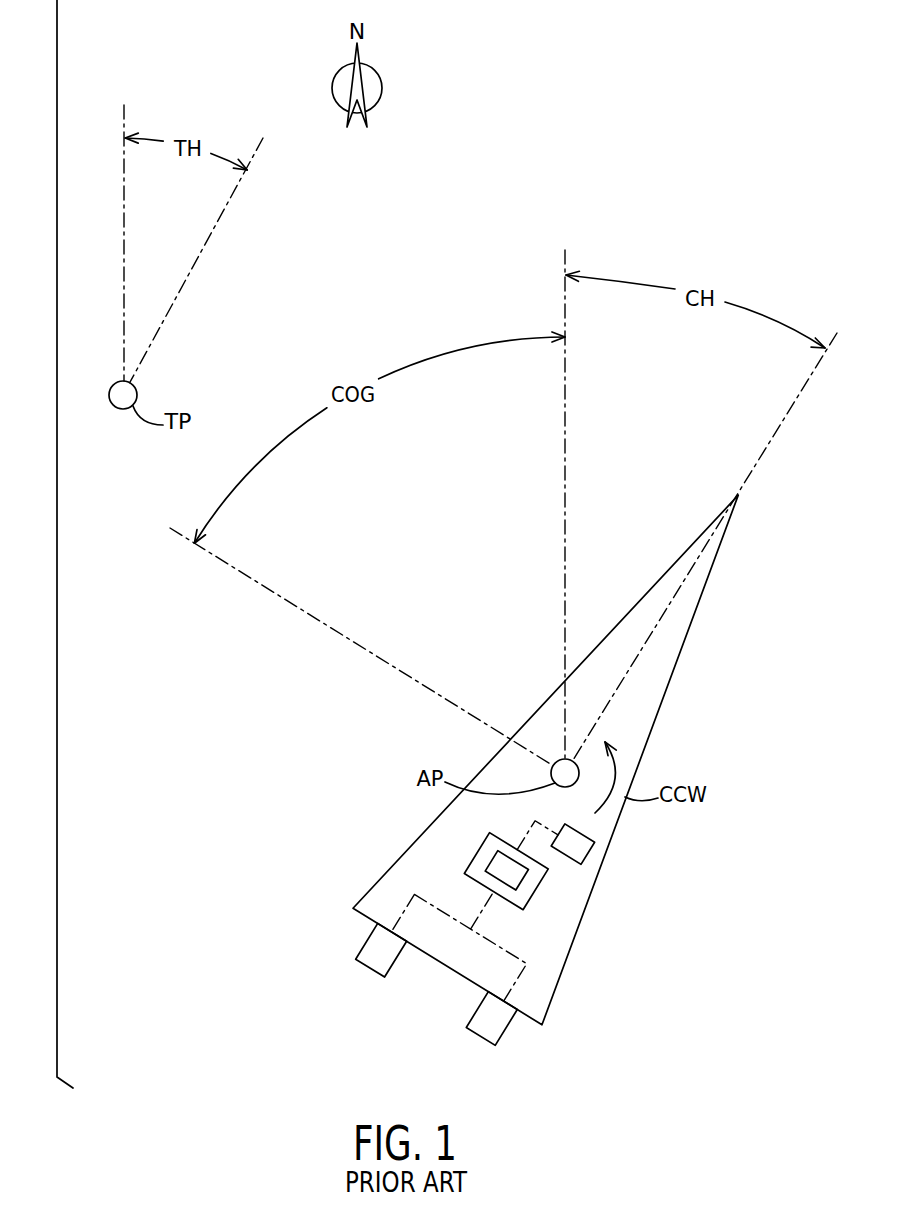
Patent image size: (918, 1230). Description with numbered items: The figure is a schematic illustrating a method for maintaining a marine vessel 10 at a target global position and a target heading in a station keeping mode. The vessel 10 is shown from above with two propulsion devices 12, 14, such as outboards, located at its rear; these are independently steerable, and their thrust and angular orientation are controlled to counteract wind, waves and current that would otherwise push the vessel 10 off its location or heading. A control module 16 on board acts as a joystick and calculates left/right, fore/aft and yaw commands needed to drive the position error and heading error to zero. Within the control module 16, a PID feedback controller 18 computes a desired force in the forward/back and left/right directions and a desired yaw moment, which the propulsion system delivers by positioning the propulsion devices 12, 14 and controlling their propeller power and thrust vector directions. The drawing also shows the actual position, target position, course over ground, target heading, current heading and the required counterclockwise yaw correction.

The marine vessel 10 is at (655, 717).
The propulsion device 12 is at (370, 942).
The propulsion device 14 is at (480, 1009).
The control module 16 is at (535, 889).
The feedback controller 18 is at (489, 860).